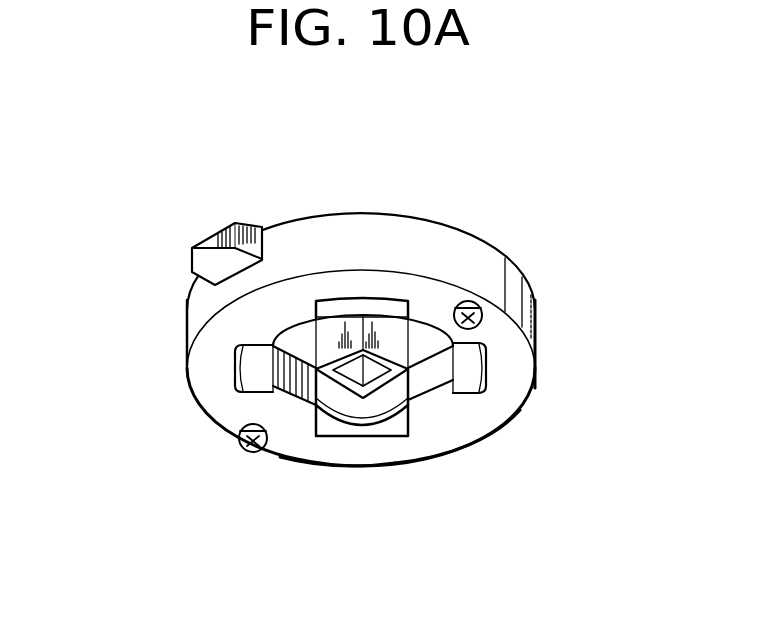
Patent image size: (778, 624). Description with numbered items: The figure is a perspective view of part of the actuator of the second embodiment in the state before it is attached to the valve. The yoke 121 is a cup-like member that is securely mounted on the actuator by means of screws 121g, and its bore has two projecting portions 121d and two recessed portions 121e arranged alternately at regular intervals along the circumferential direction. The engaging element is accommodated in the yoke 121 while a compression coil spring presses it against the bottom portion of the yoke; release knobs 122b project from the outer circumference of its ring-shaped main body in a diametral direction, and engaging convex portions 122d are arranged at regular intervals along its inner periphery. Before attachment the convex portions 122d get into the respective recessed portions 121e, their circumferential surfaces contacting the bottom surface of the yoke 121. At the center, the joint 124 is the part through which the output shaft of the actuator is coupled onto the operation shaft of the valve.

The yoke 121 is at (542, 312).
The projecting portion 121d is at (437, 417).
The recessed portion 121e is at (323, 438).
The screw 121g is at (470, 301).
The release knob 122b is at (208, 253).
The engaging convex portion 122d is at (340, 300).
The joint 124 is at (392, 340).